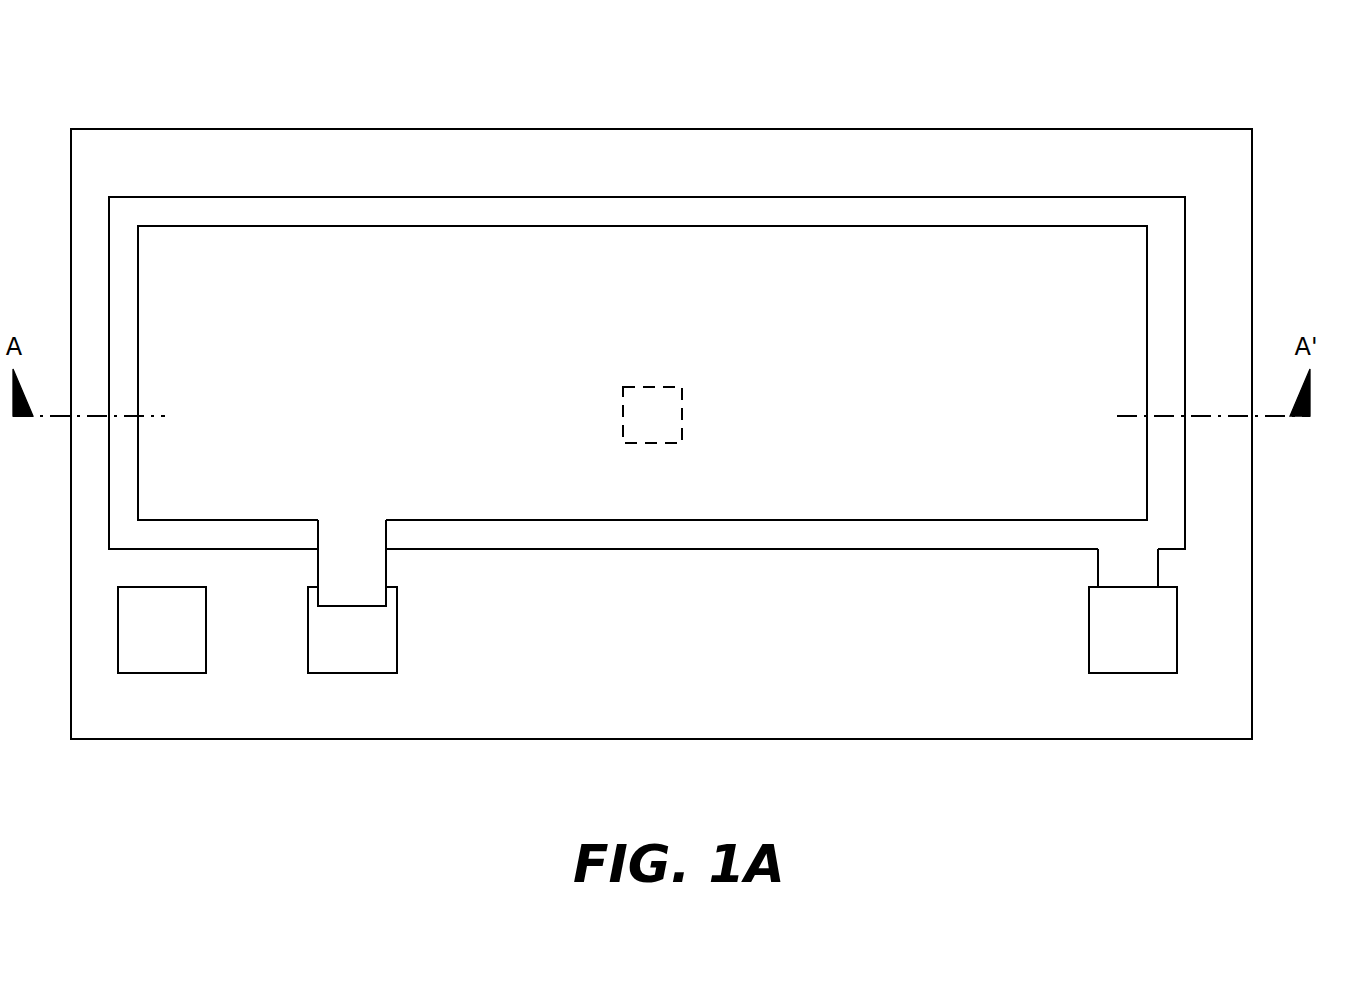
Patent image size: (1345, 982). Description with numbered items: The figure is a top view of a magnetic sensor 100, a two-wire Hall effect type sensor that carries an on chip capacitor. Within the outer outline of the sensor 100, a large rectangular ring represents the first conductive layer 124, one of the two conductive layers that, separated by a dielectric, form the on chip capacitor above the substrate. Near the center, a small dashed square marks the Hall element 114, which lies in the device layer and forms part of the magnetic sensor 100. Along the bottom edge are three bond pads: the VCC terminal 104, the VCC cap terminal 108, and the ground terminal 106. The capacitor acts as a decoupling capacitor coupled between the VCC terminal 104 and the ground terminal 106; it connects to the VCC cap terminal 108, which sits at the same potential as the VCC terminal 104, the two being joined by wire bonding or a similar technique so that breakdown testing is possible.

The magnetic sensor 100 is at (1088, 107).
The VCC terminal 104 is at (158, 659).
The ground terminal 106 is at (1132, 663).
The VCC cap terminal 108 is at (339, 659).
The Hall element 114 is at (650, 392).
The first conductive layer 124 is at (487, 203).